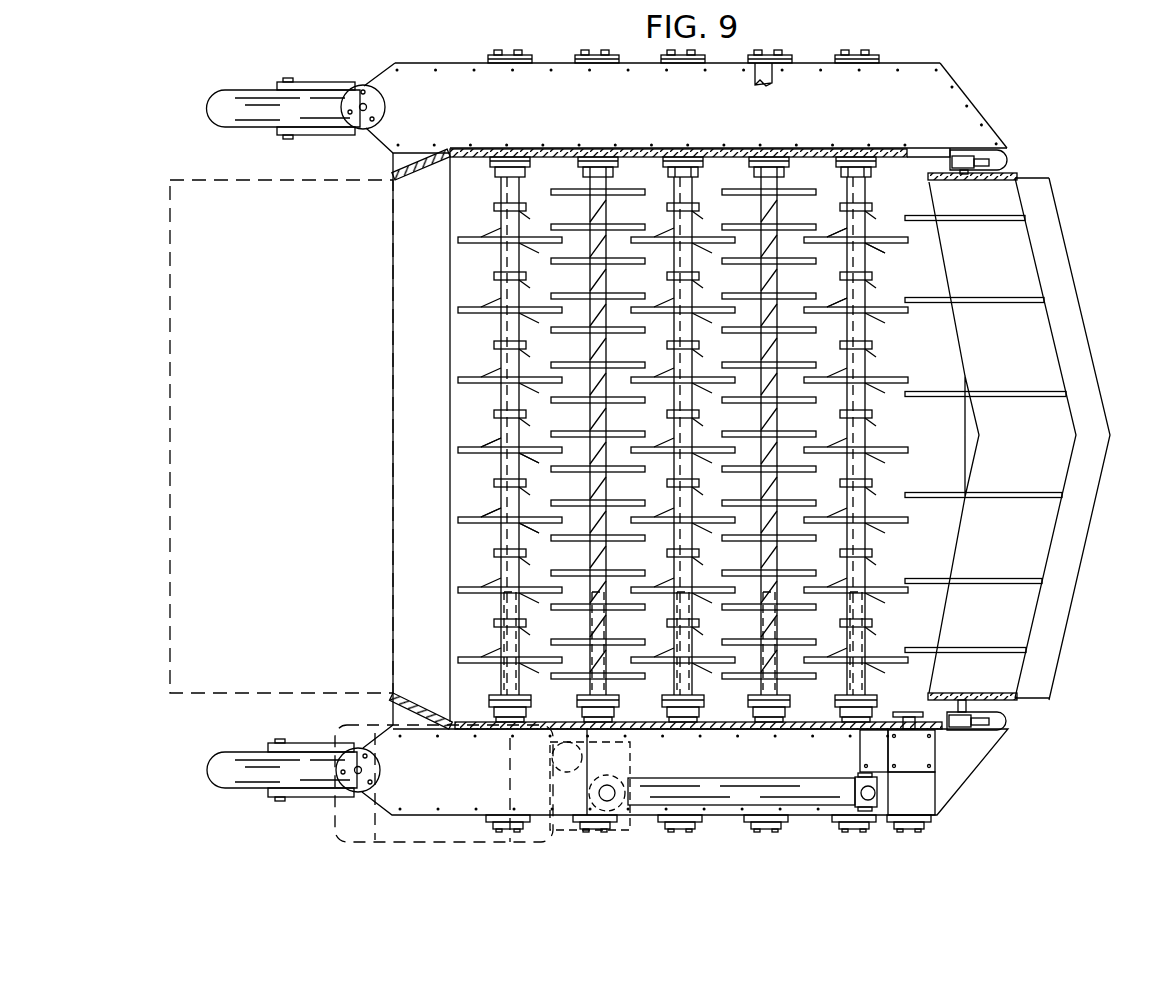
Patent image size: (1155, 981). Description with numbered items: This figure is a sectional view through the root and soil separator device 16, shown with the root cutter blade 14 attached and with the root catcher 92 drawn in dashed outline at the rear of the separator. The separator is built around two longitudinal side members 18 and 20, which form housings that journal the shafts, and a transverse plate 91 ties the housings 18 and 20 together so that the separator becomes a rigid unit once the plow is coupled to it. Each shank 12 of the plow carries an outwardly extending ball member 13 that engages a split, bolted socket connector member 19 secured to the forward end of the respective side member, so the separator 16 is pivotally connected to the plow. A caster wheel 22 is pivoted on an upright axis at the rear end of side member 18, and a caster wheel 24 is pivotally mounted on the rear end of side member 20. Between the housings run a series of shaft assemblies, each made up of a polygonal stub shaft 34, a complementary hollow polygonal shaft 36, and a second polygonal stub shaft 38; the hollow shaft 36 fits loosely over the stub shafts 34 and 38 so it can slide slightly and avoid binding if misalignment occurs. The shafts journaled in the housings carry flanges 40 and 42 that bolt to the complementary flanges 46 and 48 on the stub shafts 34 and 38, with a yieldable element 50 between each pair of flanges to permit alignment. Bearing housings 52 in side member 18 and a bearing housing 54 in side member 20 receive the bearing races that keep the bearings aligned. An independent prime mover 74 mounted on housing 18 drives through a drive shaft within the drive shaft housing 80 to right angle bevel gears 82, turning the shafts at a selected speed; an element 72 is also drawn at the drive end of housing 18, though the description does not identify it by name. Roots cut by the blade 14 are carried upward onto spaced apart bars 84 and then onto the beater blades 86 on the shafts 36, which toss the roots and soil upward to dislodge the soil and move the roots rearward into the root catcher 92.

The shank 12 is at (1000, 181).
The ball member 13 is at (964, 176).
The blade 14 is at (1082, 530).
The root and soil separator device 16 is at (987, 108).
The longitudinal side member 18 is at (725, 817).
The split, bolted socket connector member 19 is at (953, 152).
The longitudinal side member 20 is at (905, 72).
The caster wheel 22 is at (207, 760).
The caster wheel 24 is at (207, 105).
The stub shaft 34 is at (780, 642).
The hollow polygonal shaft 36 is at (506, 408).
The stub shaft 38 is at (590, 172).
The flange 40 is at (498, 716).
The flange 42 is at (500, 165).
The flange 46 is at (500, 710).
The flange 48 is at (500, 176).
The yieldable element 50 is at (616, 170).
The bearing housing 52 is at (590, 832).
The bearing housing 54 is at (523, 55).
The motor mount 72 is at (940, 760).
The independent prime mover 74 is at (333, 812).
The drive shaft housing 80 is at (762, 790).
The bevel gears 82 is at (912, 830).
The spaced apart bars 84 is at (1012, 300).
The beater blades 86 is at (468, 516).
The transverse plate 91 is at (395, 250).
The root catcher 92 is at (168, 436).